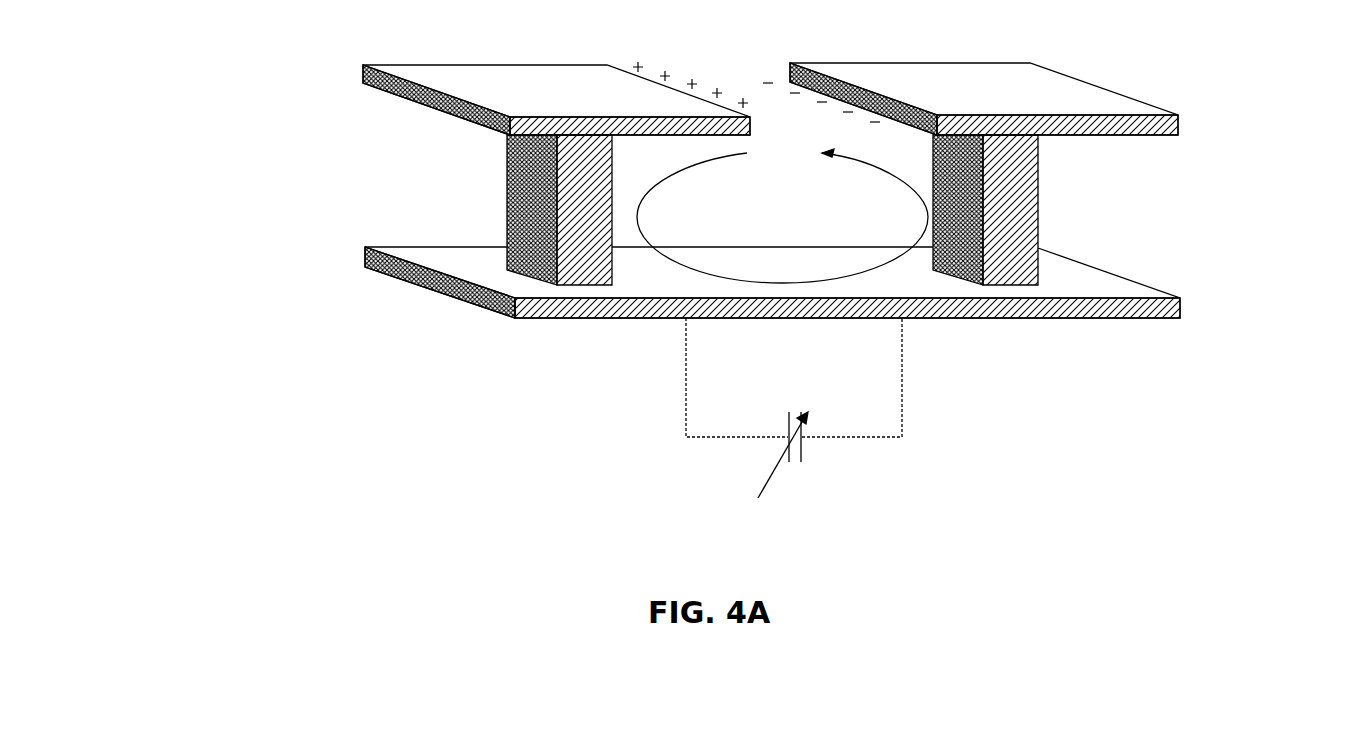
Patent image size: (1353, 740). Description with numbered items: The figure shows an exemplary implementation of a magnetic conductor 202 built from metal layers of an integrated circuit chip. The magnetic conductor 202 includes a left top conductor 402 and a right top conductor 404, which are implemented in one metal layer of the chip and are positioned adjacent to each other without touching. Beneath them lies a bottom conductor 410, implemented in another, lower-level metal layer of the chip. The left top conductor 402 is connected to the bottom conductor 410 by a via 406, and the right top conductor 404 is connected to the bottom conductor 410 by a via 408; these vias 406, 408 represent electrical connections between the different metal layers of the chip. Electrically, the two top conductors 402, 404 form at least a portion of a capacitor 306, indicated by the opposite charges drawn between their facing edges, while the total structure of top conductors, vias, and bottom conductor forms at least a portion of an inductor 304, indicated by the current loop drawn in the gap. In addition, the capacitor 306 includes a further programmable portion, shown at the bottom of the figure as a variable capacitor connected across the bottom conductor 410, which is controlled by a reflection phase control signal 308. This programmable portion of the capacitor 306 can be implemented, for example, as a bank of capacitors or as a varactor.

The magnetic conductor 202 is at (393, 466).
The inductor 304 is at (782, 216).
The capacitor 306 is at (1022, 452).
The reflection phase control signal 308 is at (758, 498).
The left top conductor 402 is at (403, 98).
The right top conductor 404 is at (1130, 100).
The via 406 is at (507, 193).
The via 408 is at (1038, 190).
The bottom conductor 410 is at (433, 290).